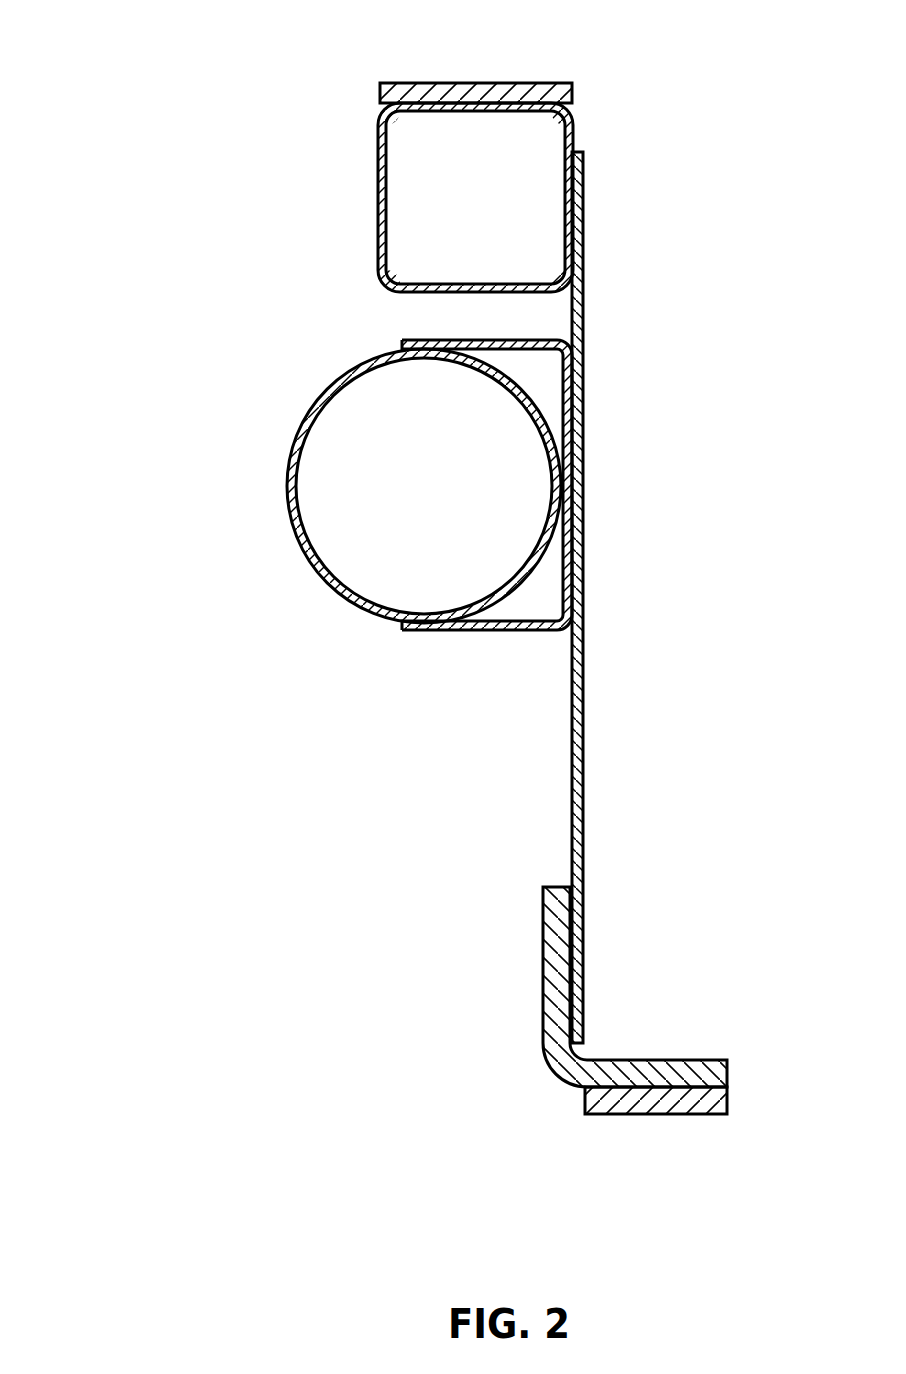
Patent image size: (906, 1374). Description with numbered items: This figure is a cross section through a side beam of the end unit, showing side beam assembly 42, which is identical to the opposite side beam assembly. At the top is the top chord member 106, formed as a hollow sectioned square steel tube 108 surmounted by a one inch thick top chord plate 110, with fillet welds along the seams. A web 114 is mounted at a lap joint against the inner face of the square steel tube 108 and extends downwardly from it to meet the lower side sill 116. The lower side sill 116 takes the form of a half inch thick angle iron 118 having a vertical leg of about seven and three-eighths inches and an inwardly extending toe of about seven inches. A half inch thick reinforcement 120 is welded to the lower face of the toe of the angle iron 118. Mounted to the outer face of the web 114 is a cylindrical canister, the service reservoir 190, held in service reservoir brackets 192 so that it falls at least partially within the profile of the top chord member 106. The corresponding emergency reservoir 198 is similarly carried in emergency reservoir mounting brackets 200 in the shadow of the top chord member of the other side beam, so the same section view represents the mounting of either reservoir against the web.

The side beam assembly 42 is at (568, 820).
The top chord member 106 is at (378, 290).
The square steel tube 108 is at (376, 207).
The top chord plate 110 is at (398, 82).
The web 114 is at (588, 538).
The lower side sill 116 is at (541, 992).
The angle iron 118 is at (541, 1050).
The reinforcement 120 is at (694, 1118).
The service reservoir 190 is at (282, 520).
The service reservoir brackets 192 is at (461, 636).
The emergency reservoir 198 is at (424, 486).
The emergency reservoir mounting brackets 200 is at (487, 485).